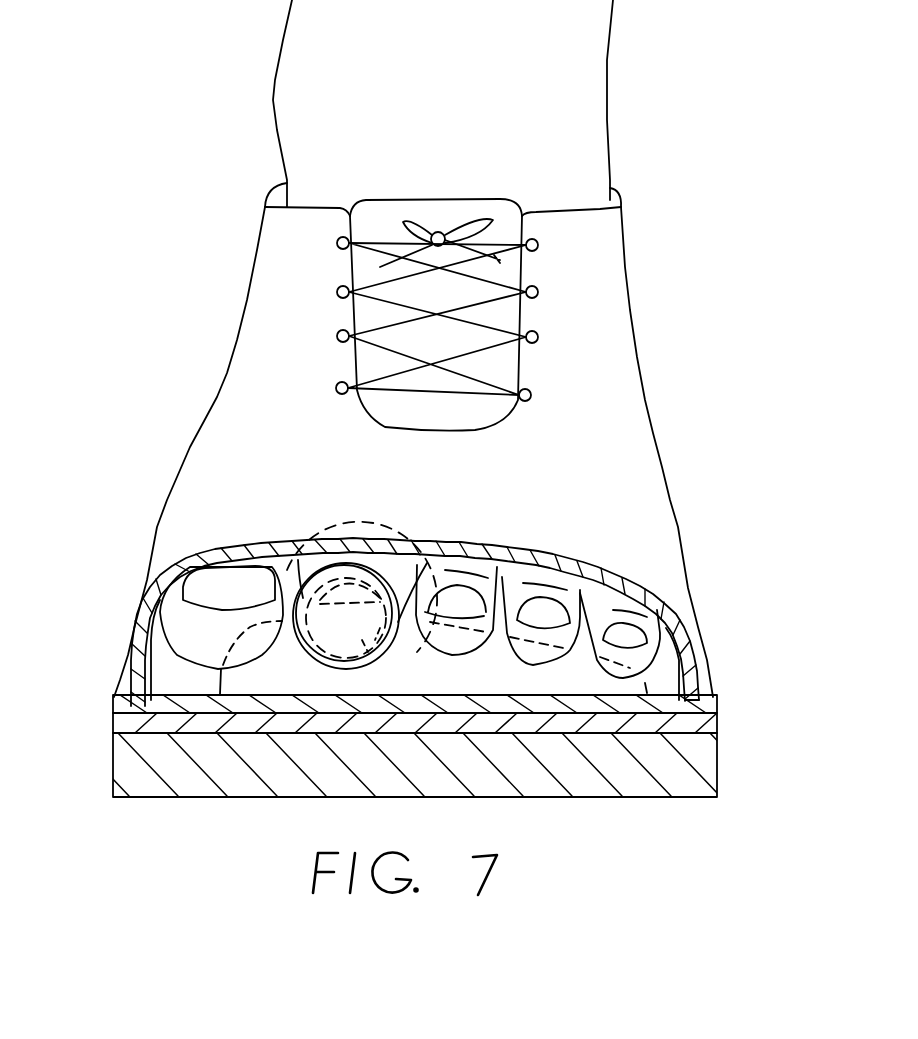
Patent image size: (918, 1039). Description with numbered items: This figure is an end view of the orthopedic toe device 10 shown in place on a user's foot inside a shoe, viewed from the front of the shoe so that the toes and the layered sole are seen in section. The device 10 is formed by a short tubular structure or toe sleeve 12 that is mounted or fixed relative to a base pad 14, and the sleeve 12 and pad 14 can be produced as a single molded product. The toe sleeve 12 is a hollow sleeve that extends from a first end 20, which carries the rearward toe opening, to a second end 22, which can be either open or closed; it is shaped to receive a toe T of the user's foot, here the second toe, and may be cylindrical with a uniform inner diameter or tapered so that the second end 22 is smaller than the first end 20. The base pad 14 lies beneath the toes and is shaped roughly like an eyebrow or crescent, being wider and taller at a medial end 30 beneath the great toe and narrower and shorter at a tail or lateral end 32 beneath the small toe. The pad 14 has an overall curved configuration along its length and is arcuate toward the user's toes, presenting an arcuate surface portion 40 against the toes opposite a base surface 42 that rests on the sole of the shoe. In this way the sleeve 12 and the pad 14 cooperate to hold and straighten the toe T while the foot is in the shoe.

The orthopedic toe device 10 is at (203, 680).
The toe sleeve 12 is at (320, 663).
The base pad 14 is at (257, 687).
The first end 20 is at (382, 521).
The second end 22 is at (345, 638).
The medial end 30 is at (220, 693).
The lateral end 32 is at (647, 688).
The arcuate surface portion 40 is at (575, 650).
The base surface 42 is at (520, 697).
The toe T is at (388, 673).